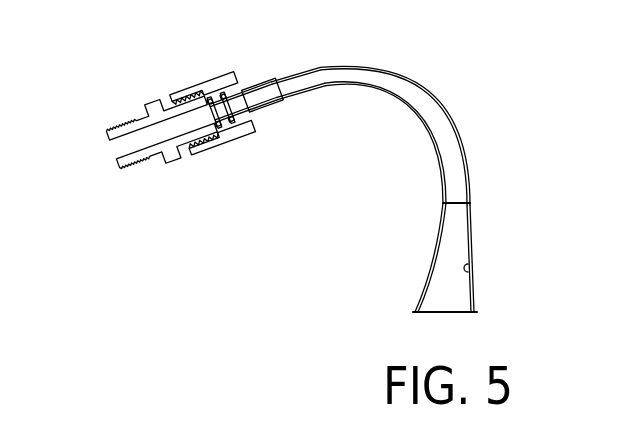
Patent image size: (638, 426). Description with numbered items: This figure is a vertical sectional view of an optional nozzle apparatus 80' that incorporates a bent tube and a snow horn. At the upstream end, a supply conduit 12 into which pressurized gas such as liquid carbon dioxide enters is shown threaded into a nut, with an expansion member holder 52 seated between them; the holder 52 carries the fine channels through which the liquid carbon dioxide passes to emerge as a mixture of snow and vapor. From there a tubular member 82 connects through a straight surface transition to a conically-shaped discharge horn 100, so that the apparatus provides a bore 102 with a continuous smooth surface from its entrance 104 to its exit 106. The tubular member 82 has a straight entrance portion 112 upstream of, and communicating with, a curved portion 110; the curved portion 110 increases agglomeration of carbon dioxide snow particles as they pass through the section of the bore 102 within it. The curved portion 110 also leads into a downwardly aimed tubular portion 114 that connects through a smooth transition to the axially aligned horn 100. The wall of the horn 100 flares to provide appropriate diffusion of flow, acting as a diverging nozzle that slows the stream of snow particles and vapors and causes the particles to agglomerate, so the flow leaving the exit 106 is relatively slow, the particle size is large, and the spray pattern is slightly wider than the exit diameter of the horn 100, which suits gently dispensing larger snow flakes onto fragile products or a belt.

The nozzle apparatus 80' is at (302, 168).
The supply conduit 12 is at (182, 167).
The bore 102 is at (236, 74).
The expansion member holder 52 is at (232, 124).
The entrance 104 is at (258, 109).
The curved portion 110 is at (384, 168).
The tubular member 82 is at (319, 66).
The straight entrance portion 112 is at (299, 75).
The downwardly aimed tubular portion 114 is at (467, 181).
The discharge horn 100 is at (468, 242).
The exit 106 is at (474, 312).